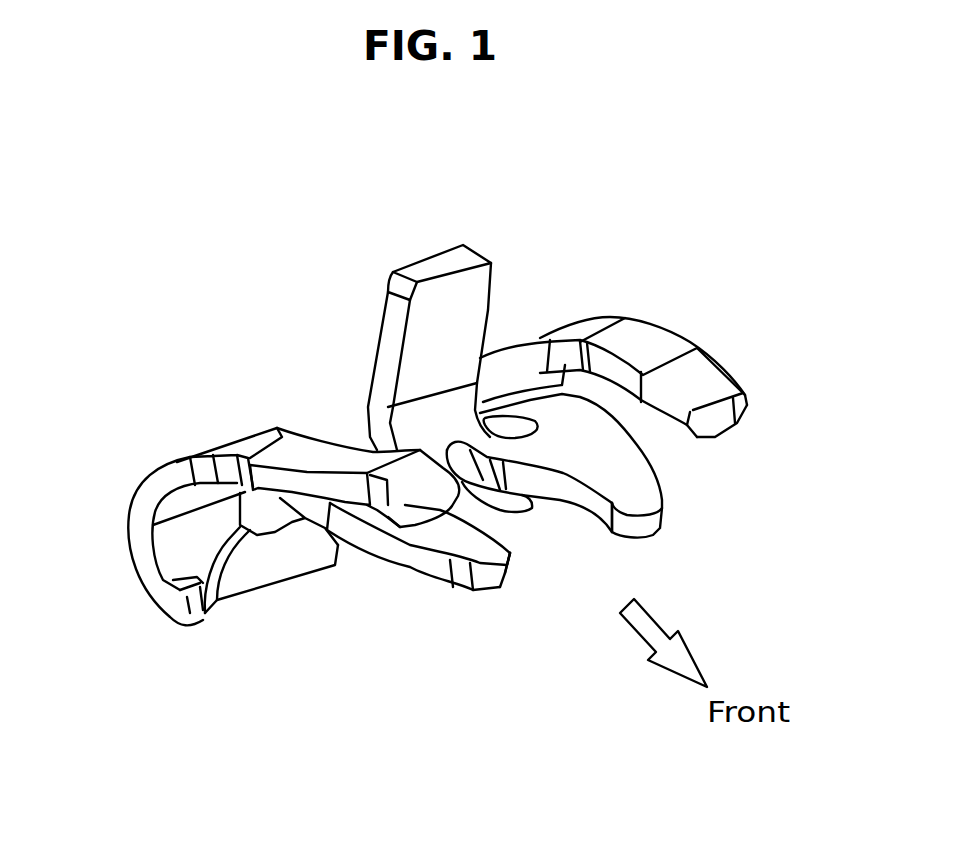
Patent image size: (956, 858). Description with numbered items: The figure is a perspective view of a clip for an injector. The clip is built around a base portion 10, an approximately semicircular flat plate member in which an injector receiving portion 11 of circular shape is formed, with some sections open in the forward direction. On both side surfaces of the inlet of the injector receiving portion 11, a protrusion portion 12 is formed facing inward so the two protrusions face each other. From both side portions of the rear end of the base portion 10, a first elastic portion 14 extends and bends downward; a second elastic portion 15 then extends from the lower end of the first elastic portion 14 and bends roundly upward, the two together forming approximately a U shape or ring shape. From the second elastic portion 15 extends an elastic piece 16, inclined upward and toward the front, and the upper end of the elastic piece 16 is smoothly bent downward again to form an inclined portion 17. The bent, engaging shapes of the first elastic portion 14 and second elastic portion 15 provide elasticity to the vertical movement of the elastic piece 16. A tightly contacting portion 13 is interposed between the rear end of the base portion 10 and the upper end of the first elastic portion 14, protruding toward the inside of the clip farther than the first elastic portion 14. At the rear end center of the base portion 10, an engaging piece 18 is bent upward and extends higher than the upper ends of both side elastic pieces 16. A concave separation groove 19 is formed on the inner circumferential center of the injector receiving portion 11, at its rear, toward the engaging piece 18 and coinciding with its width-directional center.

The base portion 10 is at (643, 488).
The injector receiving portion 11 is at (530, 537).
The protrusion portion 12 is at (615, 512).
The tightly contacting portion 13 is at (303, 523).
The first elastic portion 14 is at (265, 568).
The second elastic portion 15 is at (133, 505).
The elastic piece 16 is at (322, 458).
The inclined portion 17 is at (413, 482).
The engaging piece 18 is at (445, 257).
The separation groove 19 is at (450, 440).